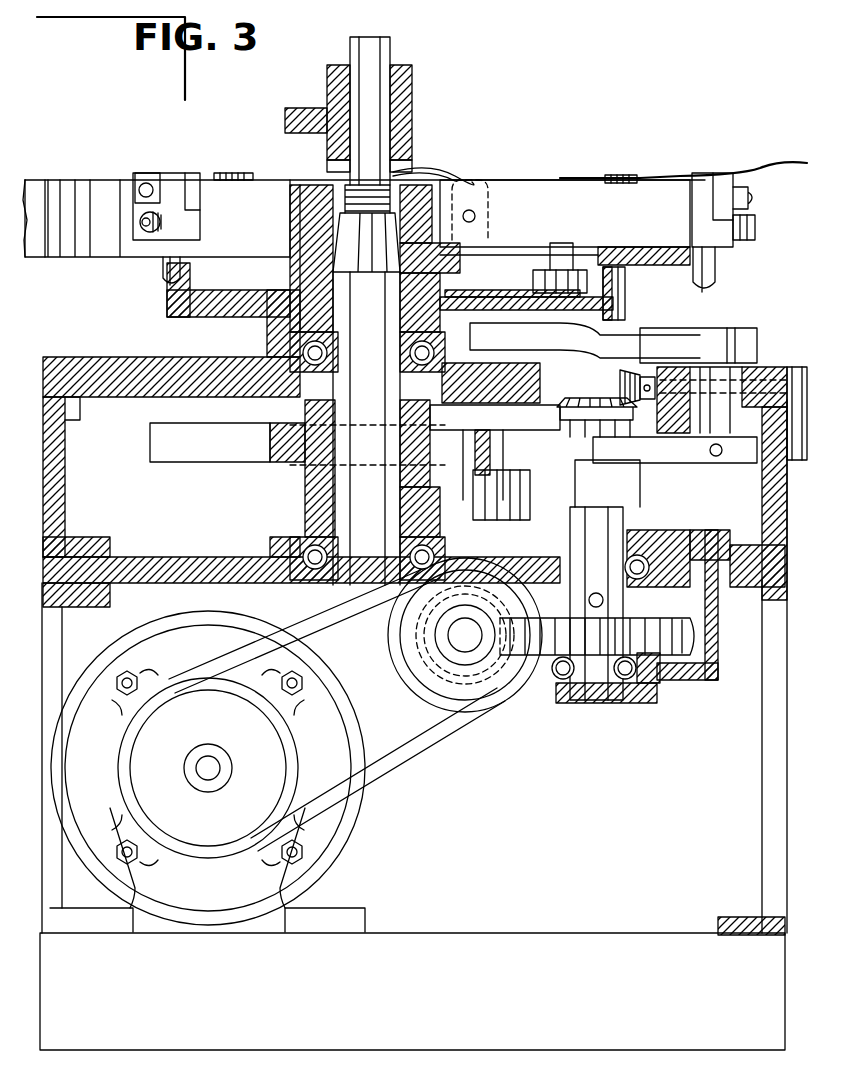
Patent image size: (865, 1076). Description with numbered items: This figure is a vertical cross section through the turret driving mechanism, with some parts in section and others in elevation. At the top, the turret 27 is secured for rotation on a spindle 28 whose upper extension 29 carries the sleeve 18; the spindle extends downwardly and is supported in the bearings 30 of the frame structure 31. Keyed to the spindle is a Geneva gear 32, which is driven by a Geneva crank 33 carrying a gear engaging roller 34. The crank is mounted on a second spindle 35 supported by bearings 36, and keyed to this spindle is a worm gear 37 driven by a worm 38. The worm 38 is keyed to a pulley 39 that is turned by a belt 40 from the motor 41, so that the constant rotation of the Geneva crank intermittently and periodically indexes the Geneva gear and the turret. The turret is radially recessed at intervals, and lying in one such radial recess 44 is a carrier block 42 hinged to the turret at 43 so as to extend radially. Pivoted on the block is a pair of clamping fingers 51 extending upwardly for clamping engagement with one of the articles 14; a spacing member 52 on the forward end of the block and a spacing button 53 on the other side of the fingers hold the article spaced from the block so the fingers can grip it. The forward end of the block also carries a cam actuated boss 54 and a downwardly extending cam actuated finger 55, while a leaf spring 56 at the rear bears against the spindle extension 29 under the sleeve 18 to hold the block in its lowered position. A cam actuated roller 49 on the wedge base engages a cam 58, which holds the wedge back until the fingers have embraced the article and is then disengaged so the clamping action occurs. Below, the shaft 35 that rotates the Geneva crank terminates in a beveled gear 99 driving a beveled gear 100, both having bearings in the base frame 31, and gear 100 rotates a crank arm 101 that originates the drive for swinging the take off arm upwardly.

The article 14 is at (780, 164).
The sleeve 18 is at (412, 100).
The turret 27 is at (100, 195).
The spindle 28 is at (300, 185).
The upper extension 29 is at (376, 138).
The bearings 30 is at (300, 352).
The frame structure 31 is at (122, 356).
The Geneva gear 32 is at (275, 455).
The Geneva crank 33 is at (480, 493).
The gear engaging roller 34 is at (495, 447).
The spindle 35 is at (612, 603).
The bearings 36 is at (650, 545).
The worm gear 37 is at (698, 648).
The worm 38 is at (500, 698).
The pulley 39 is at (440, 702).
The belt 40 is at (397, 760).
The motor 41 is at (330, 830).
The carrier block 42 is at (35, 190).
The hinge 43 is at (471, 210).
The radial recess 44 is at (388, 250).
The cam actuated roller 49 is at (533, 285).
The clamping fingers 51 is at (179, 175).
The spacing member 52 is at (147, 176).
The spacing button 53 is at (222, 174).
The cam actuated boss 54 is at (148, 230).
The cam actuated finger 55 is at (165, 268).
The leaf spring 56 is at (430, 166).
The cam 58 is at (626, 283).
The beveled gear 99 is at (590, 400).
The beveled gear 100 is at (640, 373).
The crank arm 101 is at (800, 378).